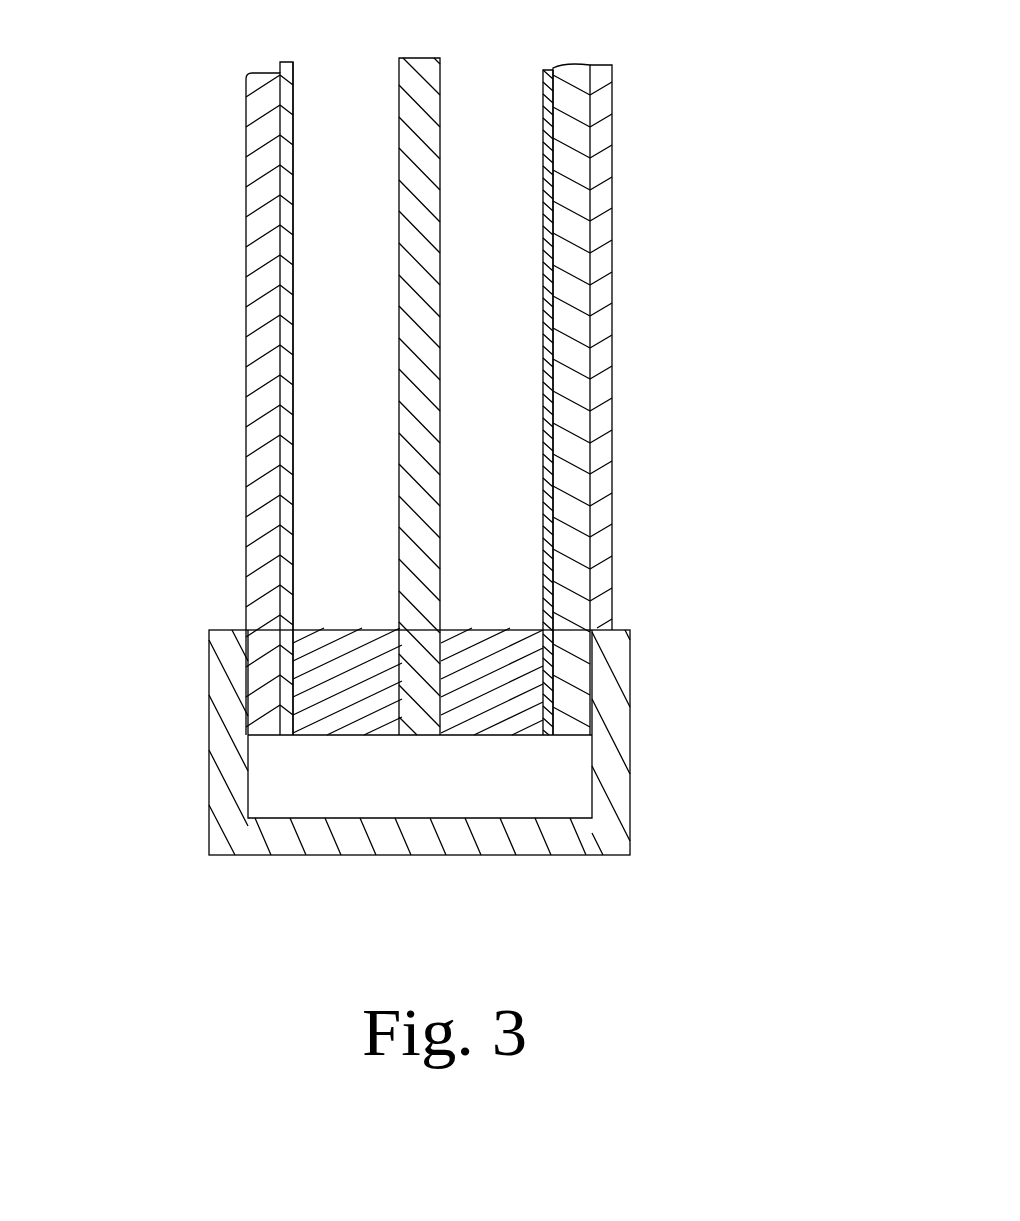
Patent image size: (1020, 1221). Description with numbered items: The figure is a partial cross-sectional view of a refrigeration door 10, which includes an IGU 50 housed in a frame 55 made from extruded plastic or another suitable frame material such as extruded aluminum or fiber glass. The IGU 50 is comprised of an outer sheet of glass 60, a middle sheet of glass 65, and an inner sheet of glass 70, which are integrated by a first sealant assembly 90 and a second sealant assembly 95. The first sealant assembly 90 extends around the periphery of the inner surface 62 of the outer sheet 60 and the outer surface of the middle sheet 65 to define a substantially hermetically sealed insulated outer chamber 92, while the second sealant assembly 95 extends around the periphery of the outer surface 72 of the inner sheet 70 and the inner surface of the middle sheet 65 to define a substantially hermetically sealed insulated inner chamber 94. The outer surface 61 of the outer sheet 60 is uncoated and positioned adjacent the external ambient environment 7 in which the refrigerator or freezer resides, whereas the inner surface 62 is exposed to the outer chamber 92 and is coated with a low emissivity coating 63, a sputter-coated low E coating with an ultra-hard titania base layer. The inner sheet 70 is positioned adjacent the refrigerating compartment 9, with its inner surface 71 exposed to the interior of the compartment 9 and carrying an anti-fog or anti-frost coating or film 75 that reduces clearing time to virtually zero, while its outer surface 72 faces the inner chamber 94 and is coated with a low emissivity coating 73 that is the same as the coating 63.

The external ambient environment 7 is at (88, 468).
The freezer or refrigerating compartment 9 is at (735, 310).
The refrigeration door 10 is at (153, 829).
The IGU 50 is at (672, 484).
The frame 55 is at (622, 793).
The outer sheet of glass 60 is at (253, 223).
The outer surface 61 is at (240, 324).
The inner surface 62 is at (292, 174).
The low emissivity coating 63 is at (295, 302).
The middle sheet of glass 65 is at (428, 60).
The inner sheet of glass 70 is at (585, 90).
The inner surface 71 is at (619, 212).
The outer surface 72 is at (542, 135).
The low emissivity coating 73 is at (548, 196).
The anti-fog or anti-frost coating or film 75 is at (620, 389).
The first sealant assembly 90 is at (343, 724).
The outer chamber 92 is at (378, 531).
The inner chamber 94 is at (512, 534).
The second sealant assembly 95 is at (497, 727).